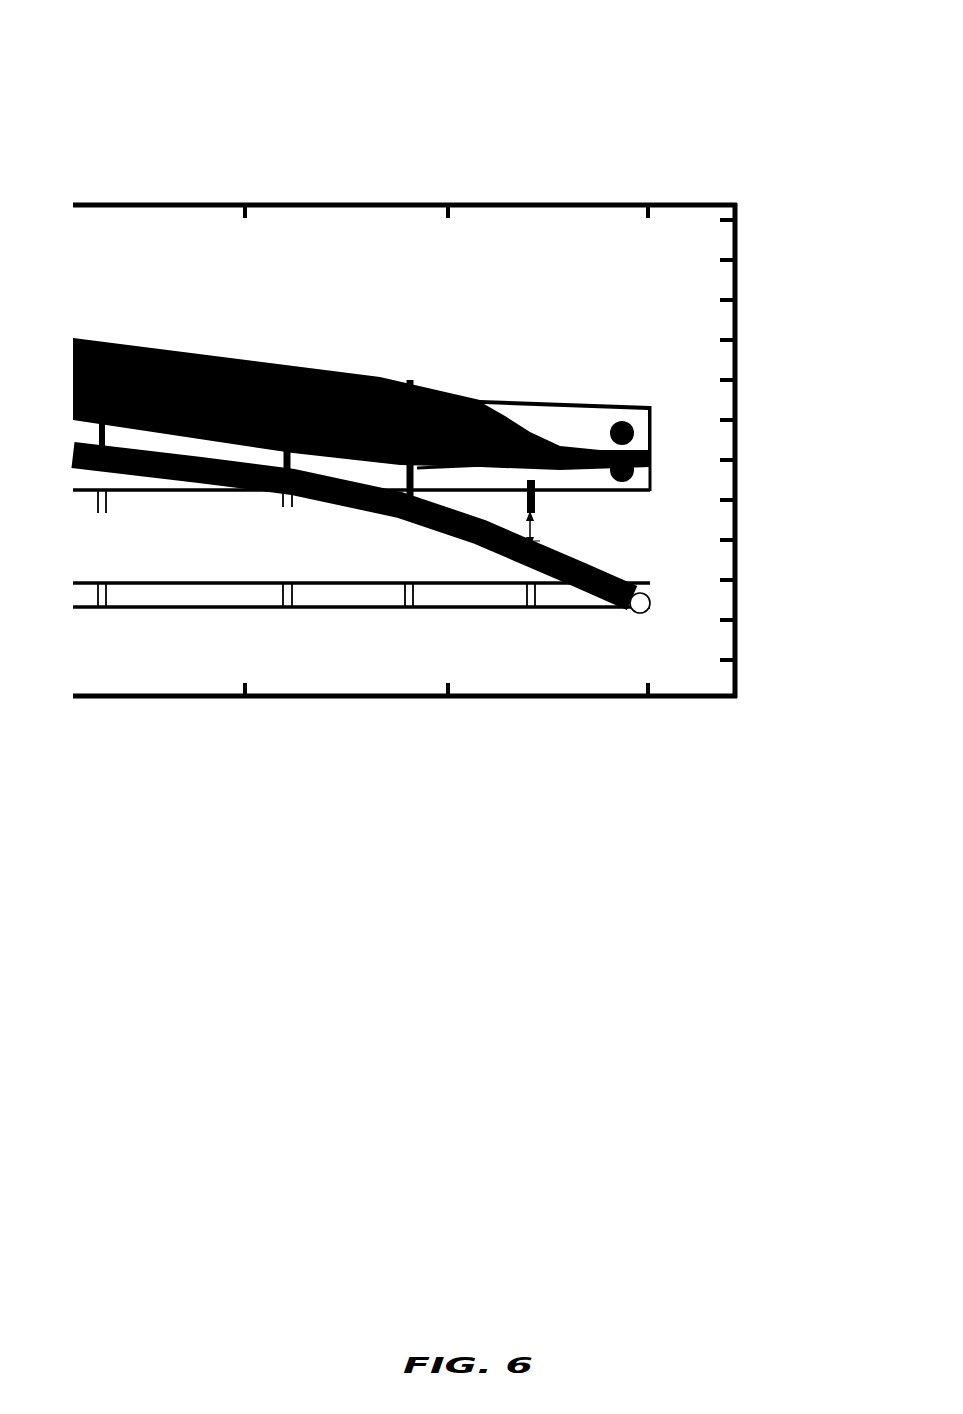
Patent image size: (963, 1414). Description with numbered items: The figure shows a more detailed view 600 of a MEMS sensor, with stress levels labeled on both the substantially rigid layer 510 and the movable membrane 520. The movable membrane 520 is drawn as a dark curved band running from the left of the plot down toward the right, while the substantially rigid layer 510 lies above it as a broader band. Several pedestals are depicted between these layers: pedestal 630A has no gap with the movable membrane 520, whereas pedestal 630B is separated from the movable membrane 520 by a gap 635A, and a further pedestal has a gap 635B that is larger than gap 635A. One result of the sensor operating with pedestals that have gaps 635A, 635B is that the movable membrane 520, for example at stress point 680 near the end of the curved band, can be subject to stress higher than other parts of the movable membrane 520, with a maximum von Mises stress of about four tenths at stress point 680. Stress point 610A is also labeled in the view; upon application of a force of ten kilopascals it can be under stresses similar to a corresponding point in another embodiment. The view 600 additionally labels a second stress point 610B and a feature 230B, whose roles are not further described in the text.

The detailed view 600 is at (124, 25).
The substantially rigid layer 510 is at (307, 370).
The movable membrane 520 is at (580, 590).
The pedestal 630A is at (290, 455).
The pedestal 630B is at (410, 475).
The gap 635A is at (413, 496).
The gap 635B is at (537, 530).
The stress point 610A is at (632, 431).
The second optical mode 610B is at (633, 474).
The waveguide 230B is at (540, 500).
The stress point 680 is at (650, 607).